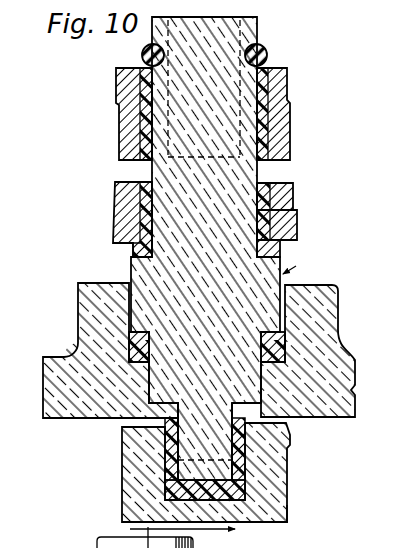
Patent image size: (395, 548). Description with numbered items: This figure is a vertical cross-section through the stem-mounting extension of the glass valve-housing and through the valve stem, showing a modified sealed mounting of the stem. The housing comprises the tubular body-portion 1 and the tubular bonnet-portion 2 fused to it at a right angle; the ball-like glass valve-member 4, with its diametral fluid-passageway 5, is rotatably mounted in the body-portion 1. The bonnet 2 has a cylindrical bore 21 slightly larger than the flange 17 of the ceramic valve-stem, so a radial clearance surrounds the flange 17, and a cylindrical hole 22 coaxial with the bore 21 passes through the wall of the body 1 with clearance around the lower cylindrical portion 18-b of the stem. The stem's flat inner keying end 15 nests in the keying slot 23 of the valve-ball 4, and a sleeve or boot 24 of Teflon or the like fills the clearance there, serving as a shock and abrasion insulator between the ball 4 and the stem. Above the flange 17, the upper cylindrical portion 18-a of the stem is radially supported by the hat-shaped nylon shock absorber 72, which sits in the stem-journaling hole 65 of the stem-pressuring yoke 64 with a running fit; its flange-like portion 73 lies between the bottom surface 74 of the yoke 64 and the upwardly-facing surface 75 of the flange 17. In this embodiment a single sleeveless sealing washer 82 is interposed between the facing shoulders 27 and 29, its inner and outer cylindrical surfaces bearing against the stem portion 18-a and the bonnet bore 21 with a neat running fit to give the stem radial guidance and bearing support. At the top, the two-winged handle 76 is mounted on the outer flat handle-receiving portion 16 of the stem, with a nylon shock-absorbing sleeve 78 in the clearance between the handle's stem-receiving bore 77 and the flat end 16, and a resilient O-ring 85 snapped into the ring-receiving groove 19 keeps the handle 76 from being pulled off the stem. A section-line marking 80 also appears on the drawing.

The body-portion 1 is at (68, 386).
The stem-mounting extension or bonnet-portion 2 is at (85, 292).
The valve-member 4 is at (282, 478).
The fluid-passageway 5 is at (290, 522).
The inner keying end portion 15 is at (190, 452).
The handle-receiving portion 16 is at (230, 30).
The flange 17 is at (222, 403).
The upper cylindrical portion 18-a is at (250, 172).
The lower cylindrical portion 18-b is at (185, 367).
The ring-receiving groove 19 is at (148, 46).
The cylindrical bore 21 is at (130, 284).
The cylindrical hole 22 is at (160, 425).
The keying slot 23 is at (188, 505).
The sleeve or boot 24 is at (235, 452).
The shoulder 27 is at (128, 352).
The shoulder 29 is at (128, 345).
The stem-pressuring yoke 64 is at (282, 195).
The stem-journaling hole 65 is at (273, 213).
The shock absorber 72 is at (118, 197).
The flange-like portion 73 is at (132, 250).
The bottom surface 74 is at (290, 252).
The upwardly-facing surface 75 is at (268, 233).
The handle 76 is at (280, 98).
The stem-receiving bore 77 is at (150, 103).
The shock-absorbing sleeve 78 is at (262, 84).
The bottom bracket 80 is at (100, 540).
The sleeveless sealing washer 82 is at (285, 340).
The O-ring 85 is at (268, 55).